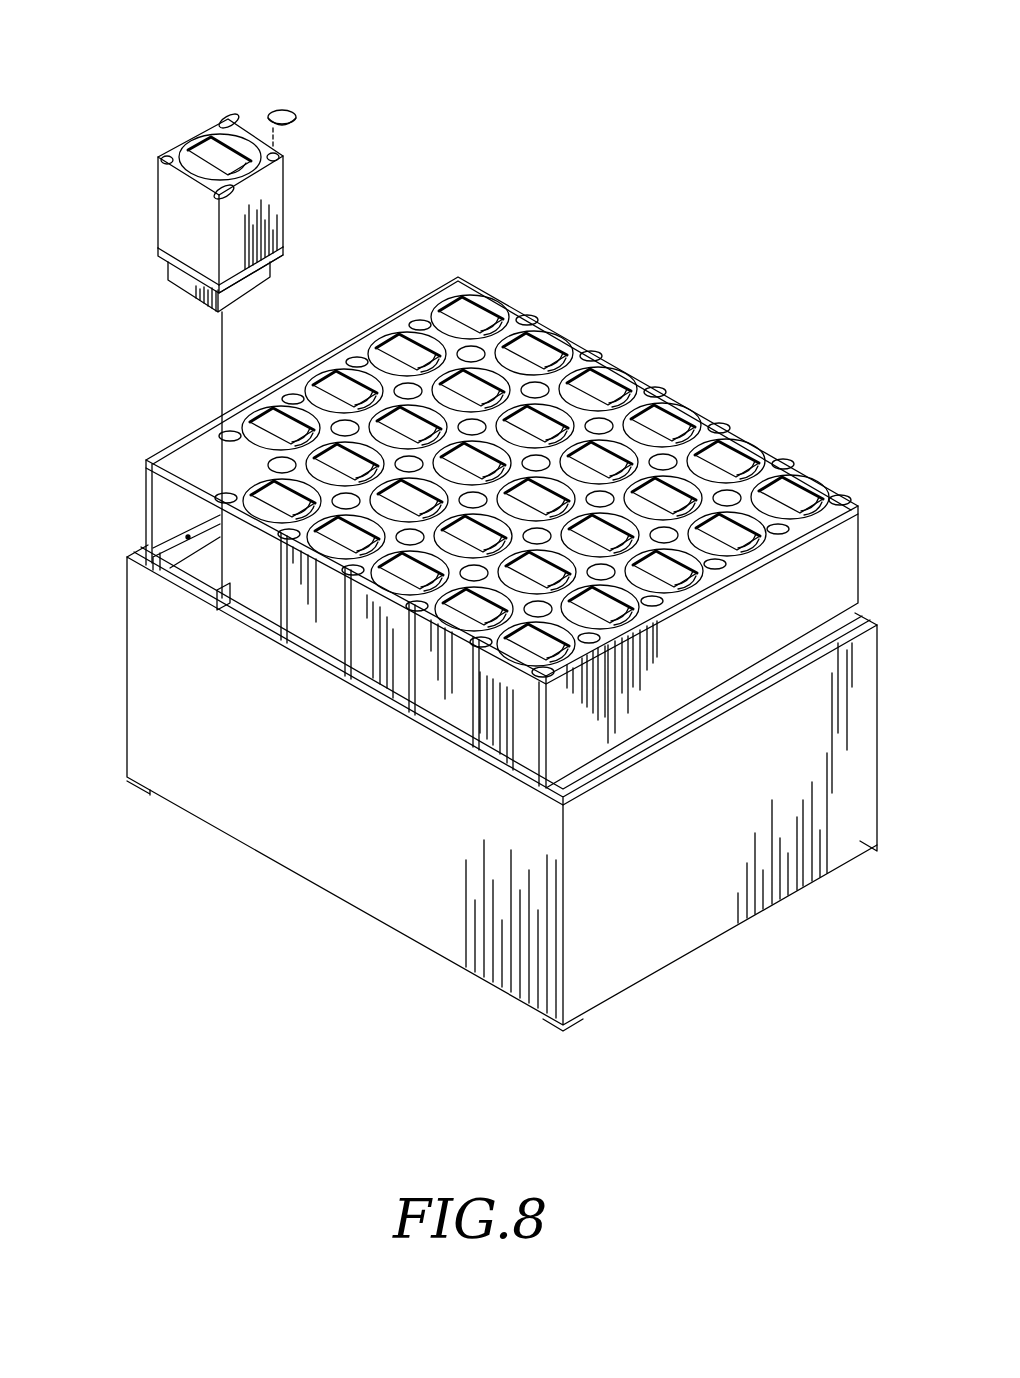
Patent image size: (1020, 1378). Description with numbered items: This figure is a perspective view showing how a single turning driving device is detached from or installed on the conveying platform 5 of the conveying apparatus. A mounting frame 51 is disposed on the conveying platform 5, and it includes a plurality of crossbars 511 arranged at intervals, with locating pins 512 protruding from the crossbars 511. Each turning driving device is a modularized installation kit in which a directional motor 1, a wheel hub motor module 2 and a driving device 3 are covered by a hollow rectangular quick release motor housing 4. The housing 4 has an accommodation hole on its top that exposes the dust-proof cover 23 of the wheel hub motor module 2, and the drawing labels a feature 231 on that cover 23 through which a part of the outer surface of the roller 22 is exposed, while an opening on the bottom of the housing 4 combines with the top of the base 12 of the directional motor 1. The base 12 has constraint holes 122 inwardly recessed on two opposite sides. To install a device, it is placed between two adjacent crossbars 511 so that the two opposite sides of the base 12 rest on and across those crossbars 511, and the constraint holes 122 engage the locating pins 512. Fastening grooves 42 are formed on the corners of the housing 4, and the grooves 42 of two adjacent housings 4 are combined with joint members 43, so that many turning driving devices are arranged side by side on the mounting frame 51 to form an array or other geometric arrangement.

The directional motor 1 is at (196, 169).
The base 12 is at (226, 270).
The constraint holes 122 is at (262, 267).
The wheel hub motor module 2 is at (209, 107).
The roller 22 is at (205, 135).
The dust-proof cover 23 is at (215, 96).
The terminal slot 231 is at (213, 147).
The driving device 3 is at (190, 287).
The quick release motor housing 4 is at (173, 203).
The fastening grooves 42 is at (281, 158).
The joint members 43 is at (290, 110).
The conveying platform 5 is at (461, 742).
The mounting frame 51 is at (150, 688).
The crossbars 511 is at (167, 548).
The locating pins 512 is at (188, 535).